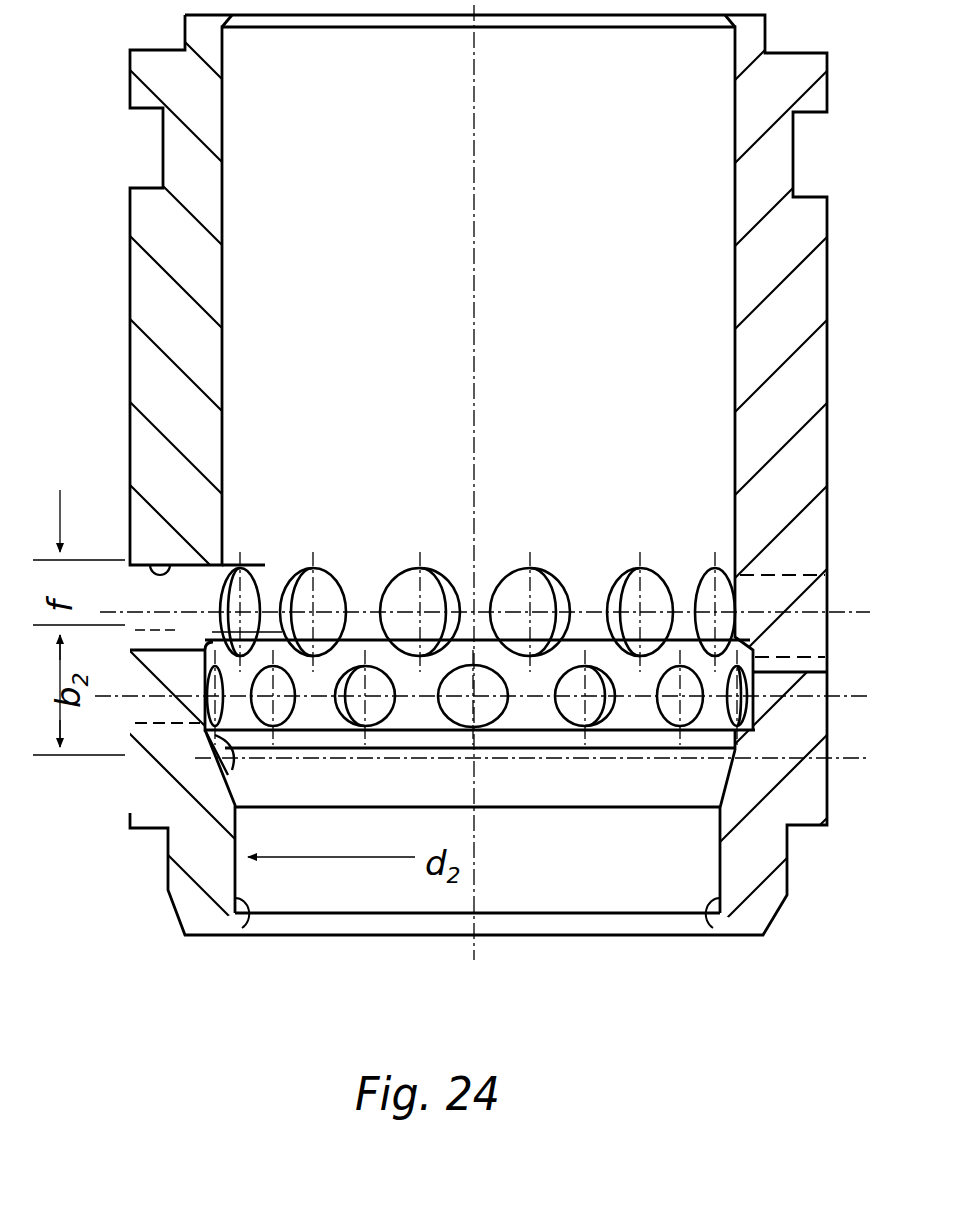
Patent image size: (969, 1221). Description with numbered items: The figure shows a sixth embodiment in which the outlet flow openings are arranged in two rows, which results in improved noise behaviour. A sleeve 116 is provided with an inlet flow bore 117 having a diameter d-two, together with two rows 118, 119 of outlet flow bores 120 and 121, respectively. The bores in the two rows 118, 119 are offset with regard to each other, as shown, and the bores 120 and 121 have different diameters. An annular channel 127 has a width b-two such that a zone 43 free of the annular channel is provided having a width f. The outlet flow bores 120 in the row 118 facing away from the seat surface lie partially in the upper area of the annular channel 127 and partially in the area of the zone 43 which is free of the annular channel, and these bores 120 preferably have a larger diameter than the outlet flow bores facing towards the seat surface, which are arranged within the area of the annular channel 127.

The sleeve 116 is at (210, 284).
The row of outlet flow bores 118 is at (348, 568).
The row of outlet flow bores 119 is at (512, 722).
The outlet flow bore 120 is at (150, 565).
The zone free of the annular channel 43 is at (125, 622).
The outlet flow bore 121 is at (122, 714).
The annular channel 127 is at (230, 750).
The inlet flow bore 117 is at (238, 925).